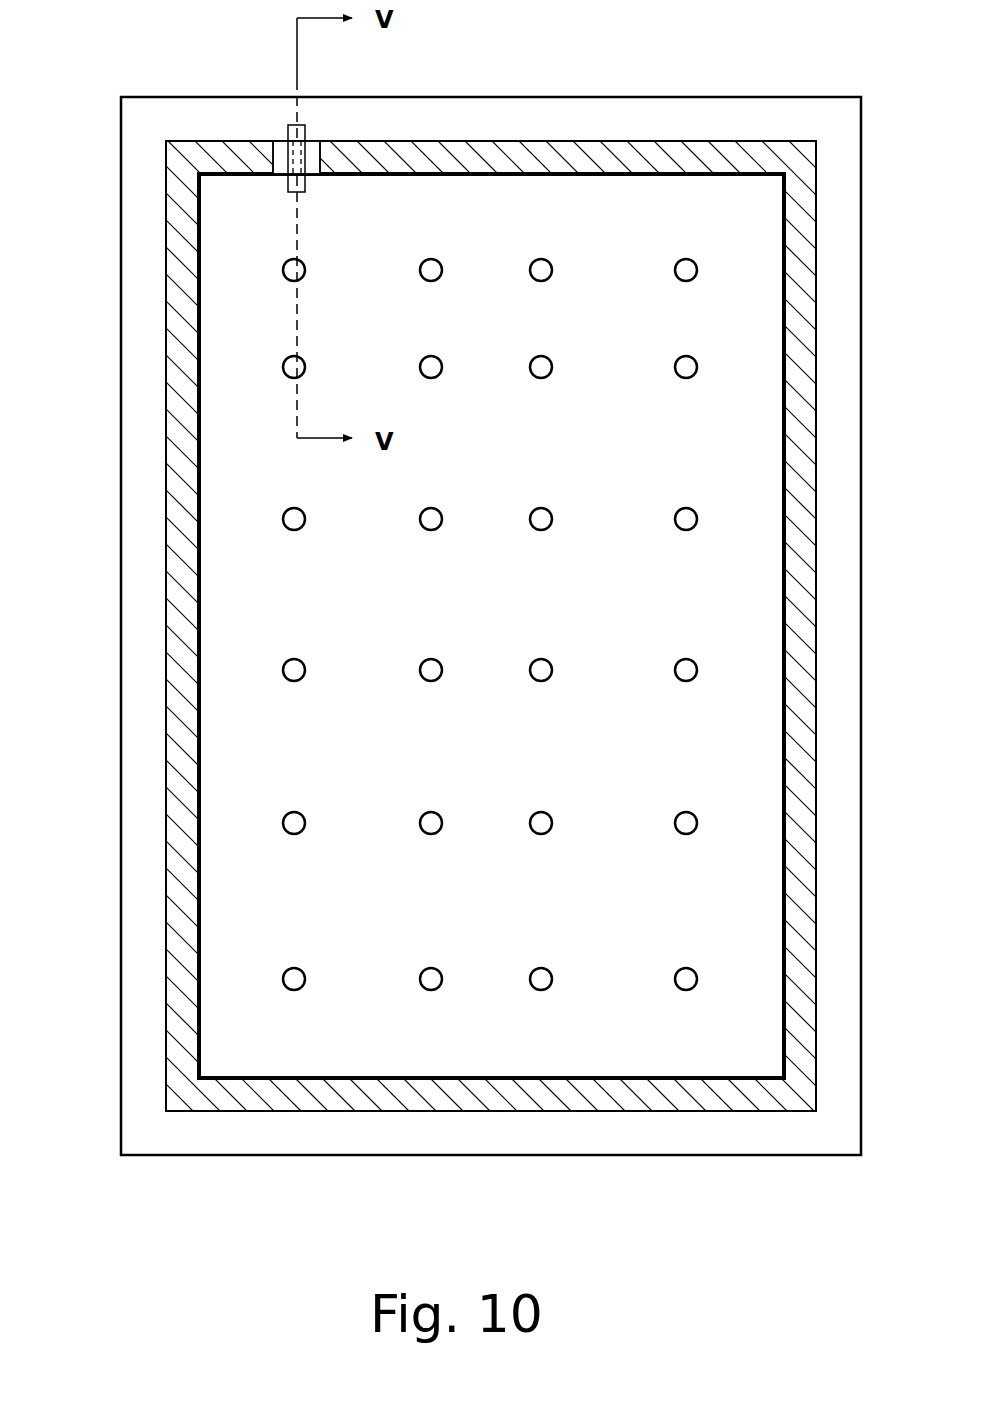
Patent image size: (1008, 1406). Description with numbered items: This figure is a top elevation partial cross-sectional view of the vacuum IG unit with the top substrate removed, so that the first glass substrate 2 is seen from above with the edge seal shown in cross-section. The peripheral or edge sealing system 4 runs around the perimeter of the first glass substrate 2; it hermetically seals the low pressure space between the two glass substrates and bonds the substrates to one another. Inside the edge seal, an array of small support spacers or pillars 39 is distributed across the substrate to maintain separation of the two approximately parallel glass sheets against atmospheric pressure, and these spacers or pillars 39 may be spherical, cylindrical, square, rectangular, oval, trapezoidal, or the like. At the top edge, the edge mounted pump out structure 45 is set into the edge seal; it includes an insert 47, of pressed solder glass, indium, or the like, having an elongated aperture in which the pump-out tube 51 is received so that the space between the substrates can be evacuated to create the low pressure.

The first glass substrate 2 is at (845, 560).
The peripheral or edge sealing system 4 is at (444, 160).
The spacers/pillars 39 is at (675, 360).
The edge mounted pump out structure 45 is at (315, 203).
The insert 47 is at (315, 165).
The pump-out tube 51 is at (305, 187).